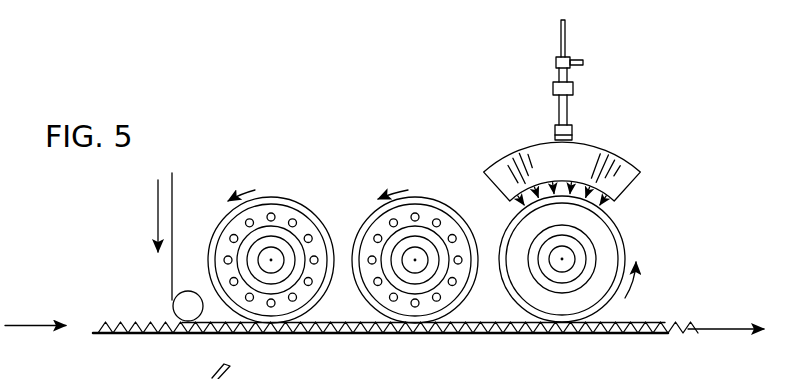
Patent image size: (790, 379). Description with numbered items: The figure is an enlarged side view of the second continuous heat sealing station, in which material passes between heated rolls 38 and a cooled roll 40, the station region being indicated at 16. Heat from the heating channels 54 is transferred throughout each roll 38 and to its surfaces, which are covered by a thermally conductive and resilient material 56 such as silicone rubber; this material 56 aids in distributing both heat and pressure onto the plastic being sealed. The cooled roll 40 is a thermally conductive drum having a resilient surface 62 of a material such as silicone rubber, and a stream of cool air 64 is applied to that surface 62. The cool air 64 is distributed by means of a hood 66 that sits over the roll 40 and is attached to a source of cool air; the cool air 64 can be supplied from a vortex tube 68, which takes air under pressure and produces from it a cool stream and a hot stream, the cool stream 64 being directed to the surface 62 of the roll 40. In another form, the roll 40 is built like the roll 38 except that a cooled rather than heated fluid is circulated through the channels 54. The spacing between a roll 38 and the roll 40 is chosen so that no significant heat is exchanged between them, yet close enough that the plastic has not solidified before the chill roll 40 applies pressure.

The conveyor 16 is at (321, 148).
The roll 38 is at (422, 185).
The cooled roll 40 is at (652, 275).
The heating channels 54 is at (372, 260).
The thermally conductive and resilient material 56 is at (213, 228).
The resilient surface 62 is at (613, 220).
The cool air 64 is at (616, 209).
The hood 66 is at (574, 163).
The vortex tube 68 is at (590, 79).